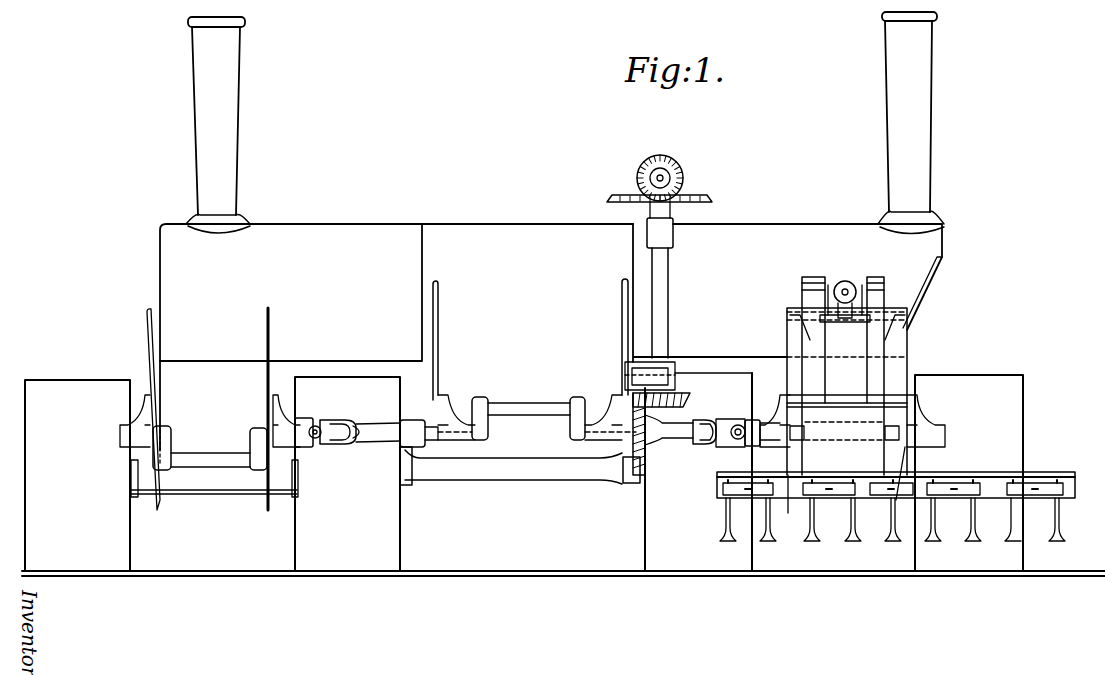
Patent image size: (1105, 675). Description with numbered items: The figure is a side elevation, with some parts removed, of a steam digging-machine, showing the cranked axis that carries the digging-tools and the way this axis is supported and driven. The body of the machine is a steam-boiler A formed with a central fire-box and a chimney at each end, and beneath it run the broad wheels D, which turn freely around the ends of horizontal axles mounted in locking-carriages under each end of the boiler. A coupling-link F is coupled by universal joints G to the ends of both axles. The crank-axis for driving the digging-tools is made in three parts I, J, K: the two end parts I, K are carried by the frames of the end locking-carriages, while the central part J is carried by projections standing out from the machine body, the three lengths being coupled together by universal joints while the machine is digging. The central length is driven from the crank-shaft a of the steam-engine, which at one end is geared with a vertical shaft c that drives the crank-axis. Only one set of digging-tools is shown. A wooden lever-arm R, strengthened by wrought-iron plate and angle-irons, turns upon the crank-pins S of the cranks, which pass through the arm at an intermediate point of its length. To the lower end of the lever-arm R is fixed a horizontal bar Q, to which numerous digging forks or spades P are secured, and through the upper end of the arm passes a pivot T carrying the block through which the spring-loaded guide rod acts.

The steam-boiler A is at (532, 231).
The crank-shaft of the steam-engine a is at (664, 177).
The vertical shaft c is at (688, 338).
The broad wheels D is at (524, 472).
The crank-pins S is at (840, 418).
The end part of the crank-axis I is at (207, 409).
The central part of the crank-axis J is at (527, 419).
The coupling-link F is at (513, 475).
The universal joints G is at (520, 474).
The pivot T is at (858, 288).
The lever-arm R is at (847, 395).
The end part of the crank-axis K is at (846, 434).
The horizontal bar Q is at (896, 485).
The digging forks or spades P is at (896, 519).